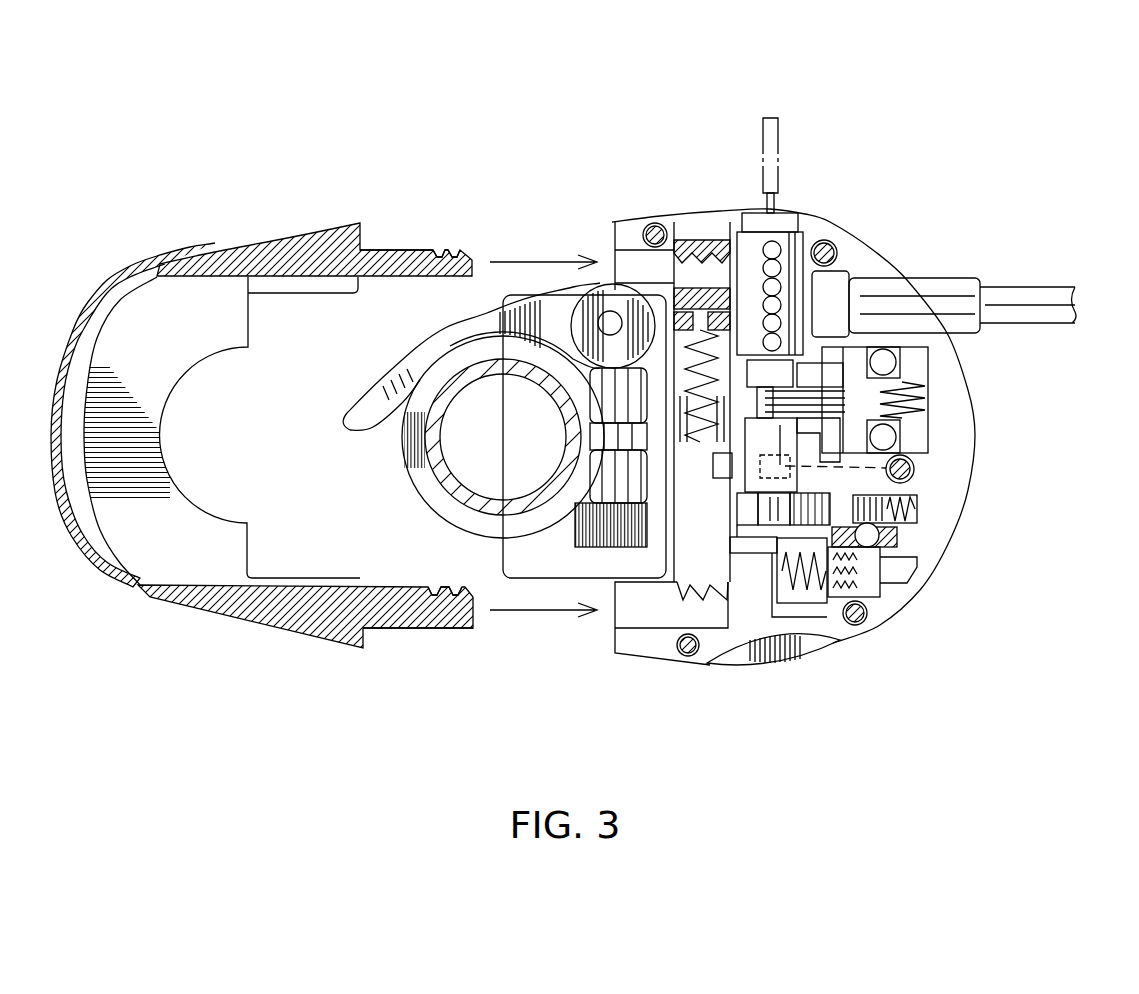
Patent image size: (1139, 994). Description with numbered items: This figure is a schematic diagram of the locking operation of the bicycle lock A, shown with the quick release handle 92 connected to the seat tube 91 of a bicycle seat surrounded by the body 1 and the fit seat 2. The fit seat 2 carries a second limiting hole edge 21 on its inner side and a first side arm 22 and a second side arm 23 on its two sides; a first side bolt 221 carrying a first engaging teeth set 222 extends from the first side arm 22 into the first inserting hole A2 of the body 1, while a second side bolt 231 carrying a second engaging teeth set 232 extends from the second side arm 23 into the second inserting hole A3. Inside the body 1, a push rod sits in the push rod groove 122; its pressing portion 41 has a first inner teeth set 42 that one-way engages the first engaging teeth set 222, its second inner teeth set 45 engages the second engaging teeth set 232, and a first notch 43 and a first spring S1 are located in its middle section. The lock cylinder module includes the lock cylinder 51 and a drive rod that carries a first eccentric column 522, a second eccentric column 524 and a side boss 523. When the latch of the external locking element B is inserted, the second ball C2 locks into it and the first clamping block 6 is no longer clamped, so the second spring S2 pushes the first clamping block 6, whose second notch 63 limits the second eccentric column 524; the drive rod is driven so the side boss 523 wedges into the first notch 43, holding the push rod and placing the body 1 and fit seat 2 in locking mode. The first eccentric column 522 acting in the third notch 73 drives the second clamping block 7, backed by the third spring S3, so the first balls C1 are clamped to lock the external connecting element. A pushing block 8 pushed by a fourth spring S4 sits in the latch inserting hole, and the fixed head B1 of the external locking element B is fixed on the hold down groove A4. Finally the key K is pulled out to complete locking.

The body 1 is at (848, 218).
The fit seat 2 is at (117, 283).
The second limiting hole edge 21 is at (197, 358).
The first side arm 22 is at (290, 642).
The first side bolt 221 is at (413, 630).
The first engaging teeth set 222 is at (450, 587).
The second side arm 23 is at (332, 232).
The second side bolt 231 is at (401, 250).
The second engaging teeth set 232 is at (446, 251).
The pressing portion 41 is at (810, 652).
The first inner teeth set 42 is at (670, 595).
The first notch 43 is at (707, 594).
The second inner teeth set 45 is at (724, 240).
The lock cylinder 51 is at (803, 215).
The first eccentric column 522 is at (902, 440).
The side boss 523 is at (914, 471).
The second eccentric column 524 is at (777, 512).
The first clamping block 6 is at (917, 502).
The second notch 63 is at (718, 467).
The second clamping block 7 is at (912, 372).
The third notch 73 is at (862, 432).
The pushing block 8 is at (870, 600).
The seat tube 91 is at (487, 508).
The quick release handle 92 is at (397, 447).
The push rod groove 122 is at (700, 335).
The bicycle lock A is at (566, 172).
The first inserting hole A2 is at (615, 618).
The second inserting hole A3 is at (614, 262).
The hold down groove A4 is at (840, 268).
The external locking element B is at (1002, 277).
The fixed head B1 is at (846, 297).
The first balls C1 is at (893, 360).
The second ball C2 is at (880, 542).
The key K is at (780, 130).
The first spring S1 is at (683, 250).
The second spring S2 is at (907, 520).
The third spring S3 is at (792, 402).
The fourth spring S4 is at (822, 650).